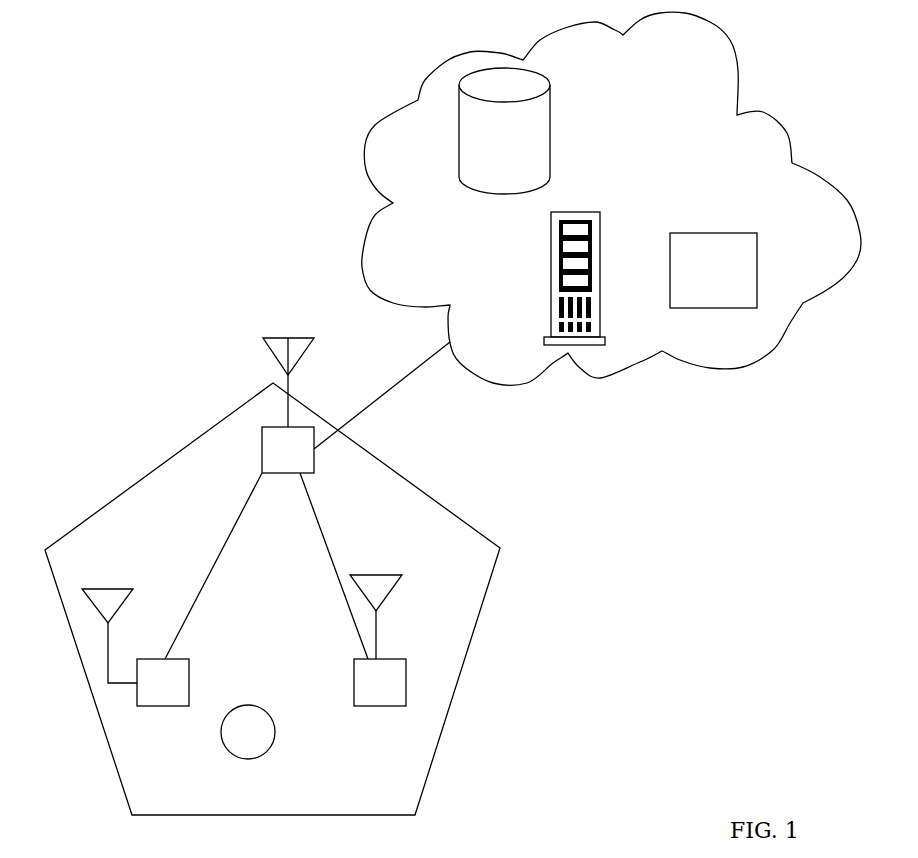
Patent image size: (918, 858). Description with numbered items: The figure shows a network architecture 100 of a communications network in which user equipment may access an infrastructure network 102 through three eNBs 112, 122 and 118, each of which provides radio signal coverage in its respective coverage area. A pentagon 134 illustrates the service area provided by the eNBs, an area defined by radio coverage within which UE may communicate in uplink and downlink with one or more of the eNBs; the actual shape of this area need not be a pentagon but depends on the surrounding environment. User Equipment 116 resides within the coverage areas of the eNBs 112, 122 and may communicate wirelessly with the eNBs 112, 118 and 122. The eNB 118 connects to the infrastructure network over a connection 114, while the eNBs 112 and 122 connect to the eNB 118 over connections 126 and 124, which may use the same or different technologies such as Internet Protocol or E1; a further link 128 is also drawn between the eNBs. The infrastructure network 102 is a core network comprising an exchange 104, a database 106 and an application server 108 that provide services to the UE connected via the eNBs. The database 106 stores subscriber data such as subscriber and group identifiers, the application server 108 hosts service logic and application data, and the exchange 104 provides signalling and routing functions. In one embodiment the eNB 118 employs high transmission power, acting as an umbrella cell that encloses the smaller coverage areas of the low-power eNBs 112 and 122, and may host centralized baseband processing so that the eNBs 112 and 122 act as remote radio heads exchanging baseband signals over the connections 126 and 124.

The network architecture 100 is at (698, 580).
The infrastructure network 102 is at (740, 67).
The exchange 104 is at (757, 233).
The database 106 is at (551, 105).
The application server 108 is at (604, 200).
The eNB 112 is at (165, 659).
The connection 114 is at (403, 379).
The User Equipment 116 is at (270, 749).
The eNB 118 is at (262, 472).
The eNB 122 is at (407, 683).
The connection 124 is at (367, 660).
The connection 126 is at (215, 557).
The link 128 is at (318, 515).
The pentagon 134 is at (500, 548).